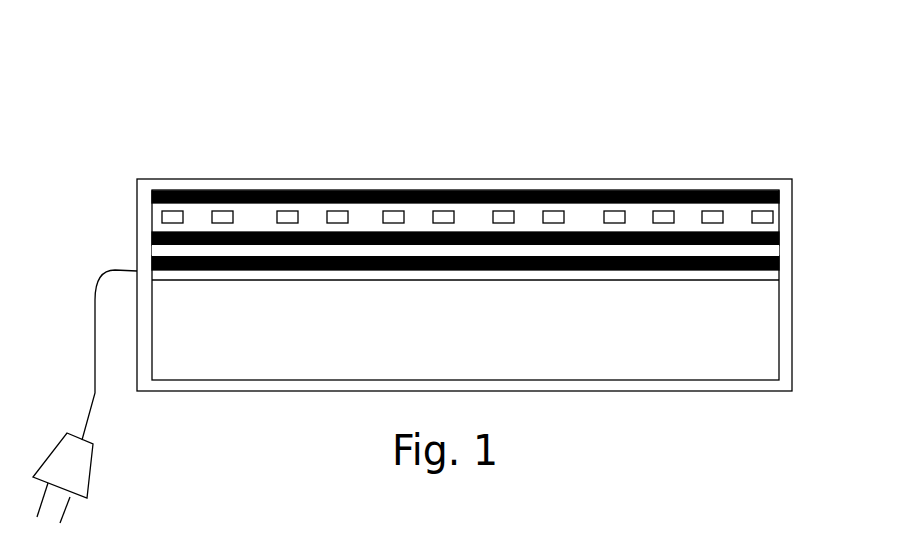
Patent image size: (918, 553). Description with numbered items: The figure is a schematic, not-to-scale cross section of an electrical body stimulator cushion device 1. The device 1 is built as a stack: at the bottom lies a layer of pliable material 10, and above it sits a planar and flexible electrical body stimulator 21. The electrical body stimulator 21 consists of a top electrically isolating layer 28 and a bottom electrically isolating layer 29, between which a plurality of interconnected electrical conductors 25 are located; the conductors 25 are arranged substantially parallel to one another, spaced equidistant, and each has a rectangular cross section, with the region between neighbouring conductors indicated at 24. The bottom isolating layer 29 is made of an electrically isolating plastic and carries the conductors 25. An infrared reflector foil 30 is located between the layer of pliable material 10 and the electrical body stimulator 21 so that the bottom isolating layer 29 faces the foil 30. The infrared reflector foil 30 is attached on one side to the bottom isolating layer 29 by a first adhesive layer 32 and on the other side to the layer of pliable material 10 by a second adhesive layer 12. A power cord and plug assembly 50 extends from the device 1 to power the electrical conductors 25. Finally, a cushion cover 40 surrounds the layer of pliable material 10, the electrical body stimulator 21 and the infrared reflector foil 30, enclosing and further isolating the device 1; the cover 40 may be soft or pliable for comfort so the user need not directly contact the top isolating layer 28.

The electrical body stimulator cushion device 1 is at (205, 163).
The layer of pliable material 10 is at (438, 340).
The second adhesive layer 12 is at (728, 277).
The electrical body stimulator 21 is at (735, 215).
The spacer region 24 is at (642, 218).
The electrical conductors 25 is at (512, 210).
The top electrically isolating layer 28 is at (417, 193).
The bottom electrically isolating layer 29 is at (264, 232).
The infrared reflector foil 30 is at (700, 268).
The first adhesive layer 32 is at (747, 250).
The cushion cover 40 is at (193, 391).
The power cord and plug assembly 50 is at (70, 468).